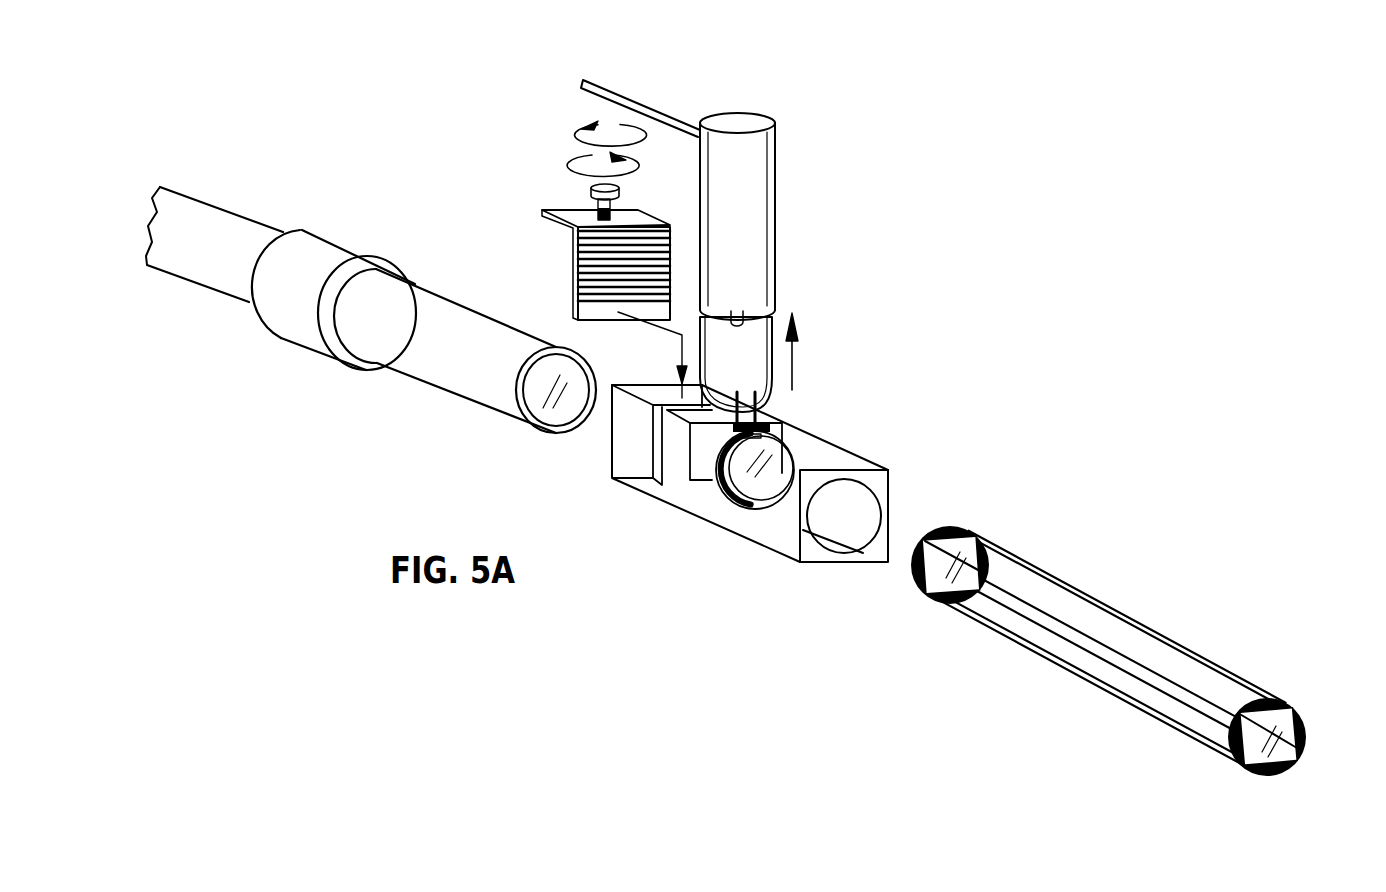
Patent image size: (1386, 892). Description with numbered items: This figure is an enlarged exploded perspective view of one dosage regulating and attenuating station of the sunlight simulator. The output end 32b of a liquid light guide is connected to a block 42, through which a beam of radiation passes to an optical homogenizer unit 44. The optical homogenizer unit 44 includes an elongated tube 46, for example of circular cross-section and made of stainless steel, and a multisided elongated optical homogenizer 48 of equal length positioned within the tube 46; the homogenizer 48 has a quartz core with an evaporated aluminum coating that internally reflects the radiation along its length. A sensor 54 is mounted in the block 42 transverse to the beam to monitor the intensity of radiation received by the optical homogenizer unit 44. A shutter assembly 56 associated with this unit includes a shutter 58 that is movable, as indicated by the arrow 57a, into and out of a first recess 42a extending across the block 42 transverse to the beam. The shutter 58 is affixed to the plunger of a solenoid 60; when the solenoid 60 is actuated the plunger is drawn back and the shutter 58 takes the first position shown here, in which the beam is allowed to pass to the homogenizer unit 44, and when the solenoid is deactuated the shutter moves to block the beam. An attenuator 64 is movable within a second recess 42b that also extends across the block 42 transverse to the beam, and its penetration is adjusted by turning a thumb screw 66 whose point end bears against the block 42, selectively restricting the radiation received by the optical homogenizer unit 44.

The output end of liquid light guide 32b is at (222, 208).
The block 42 is at (724, 486).
The first recess 42a is at (682, 470).
The second recess 42b is at (657, 443).
The optical homogenizer unit 44 is at (1134, 646).
The elongated tube 46 is at (1035, 565).
The optical homogenizer 48 is at (1283, 722).
The sensor 54 is at (745, 520).
The shutter assembly 56 is at (812, 257).
The arrow 57a is at (792, 362).
The shutter 58 is at (762, 386).
The solenoid 60 is at (775, 168).
The attenuator 64 is at (575, 268).
The thumb screw 66 is at (590, 198).